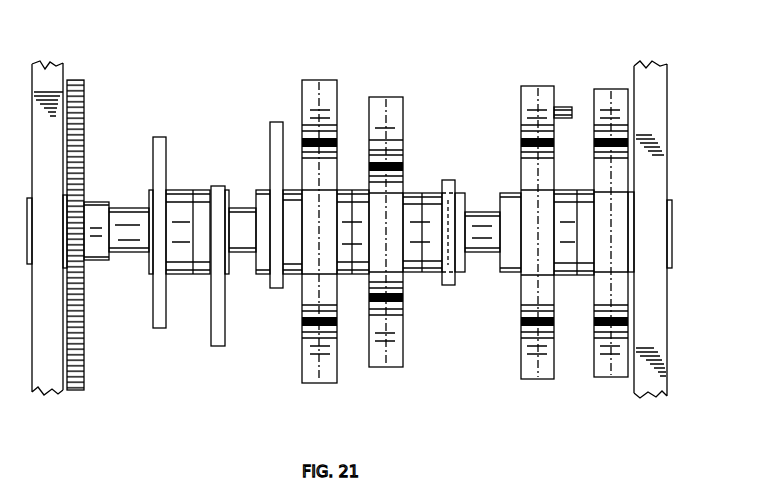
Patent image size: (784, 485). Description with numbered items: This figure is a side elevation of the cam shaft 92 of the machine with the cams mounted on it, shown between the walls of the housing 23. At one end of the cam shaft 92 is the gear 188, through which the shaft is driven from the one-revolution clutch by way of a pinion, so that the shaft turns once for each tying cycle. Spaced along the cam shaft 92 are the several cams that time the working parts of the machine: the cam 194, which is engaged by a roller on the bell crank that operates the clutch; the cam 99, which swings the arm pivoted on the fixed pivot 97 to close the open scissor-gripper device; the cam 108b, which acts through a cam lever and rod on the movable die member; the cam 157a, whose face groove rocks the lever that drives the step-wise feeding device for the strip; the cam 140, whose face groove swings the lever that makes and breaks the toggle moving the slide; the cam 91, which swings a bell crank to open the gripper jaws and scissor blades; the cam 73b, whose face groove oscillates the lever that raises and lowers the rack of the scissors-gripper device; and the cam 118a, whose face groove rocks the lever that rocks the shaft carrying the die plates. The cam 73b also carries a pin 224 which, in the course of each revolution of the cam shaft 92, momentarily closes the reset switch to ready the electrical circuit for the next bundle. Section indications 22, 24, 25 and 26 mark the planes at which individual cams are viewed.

The housing 23 is at (36, 394).
The gear 188 is at (83, 108).
The cam 194 is at (162, 291).
The cam 99 is at (216, 338).
The cam 108b is at (273, 146).
The section line 22 is at (248, 333).
The cam 157a is at (321, 82).
The section line 24 is at (358, 388).
The cam 140 is at (401, 343).
The cam 91 is at (450, 283).
The cam shaft 92 is at (472, 212).
The section line 25 is at (513, 417).
The cam 73b is at (536, 86).
The pin 224 is at (567, 106).
The section line 26 is at (581, 417).
The cam 118a is at (621, 96).
The fixed pivot 97 is at (412, 484).